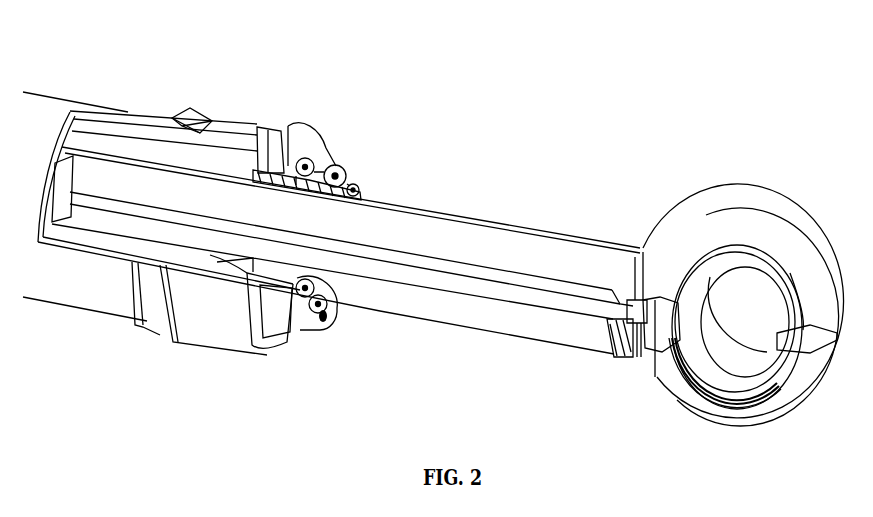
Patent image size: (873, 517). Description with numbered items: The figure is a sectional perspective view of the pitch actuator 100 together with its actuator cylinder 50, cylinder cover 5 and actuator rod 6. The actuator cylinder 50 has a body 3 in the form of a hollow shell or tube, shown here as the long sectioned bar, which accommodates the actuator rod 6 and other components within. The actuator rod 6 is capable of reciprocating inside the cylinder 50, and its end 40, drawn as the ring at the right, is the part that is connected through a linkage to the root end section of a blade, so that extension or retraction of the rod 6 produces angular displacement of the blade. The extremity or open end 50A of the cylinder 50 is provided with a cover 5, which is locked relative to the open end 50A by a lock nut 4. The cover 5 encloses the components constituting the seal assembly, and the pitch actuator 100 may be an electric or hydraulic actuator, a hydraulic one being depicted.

The body 3 is at (122, 120).
The lock nut 4 is at (200, 108).
The cylinder cover 5 is at (290, 127).
The actuator rod 6 is at (392, 224).
The end 40 is at (740, 216).
The actuator cylinder 50 is at (44, 100).
The open end 50A is at (210, 255).
The pitch actuator 100 is at (530, 134).